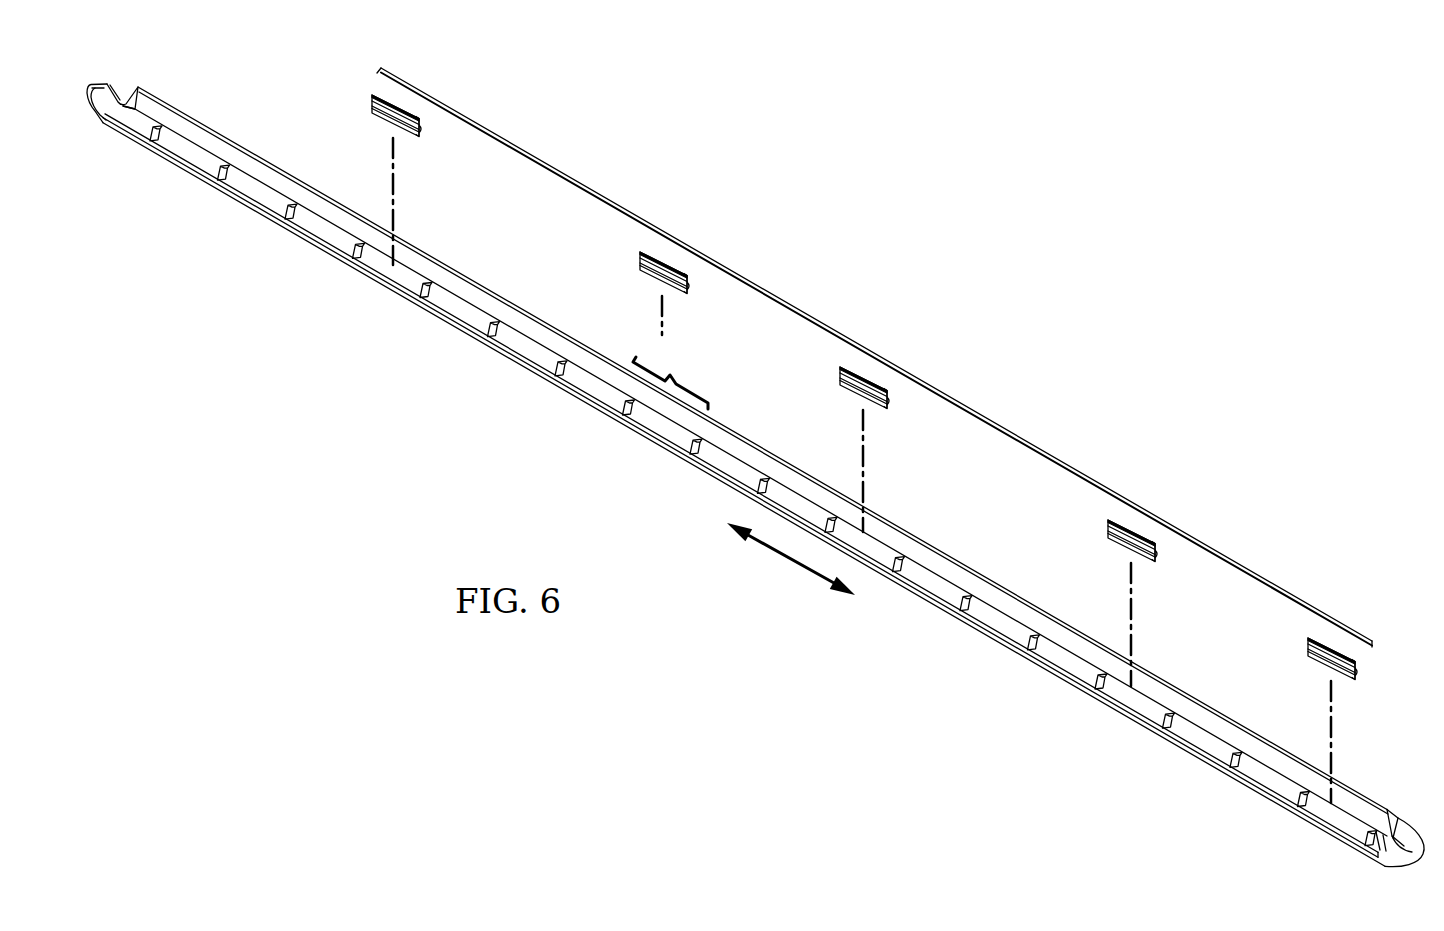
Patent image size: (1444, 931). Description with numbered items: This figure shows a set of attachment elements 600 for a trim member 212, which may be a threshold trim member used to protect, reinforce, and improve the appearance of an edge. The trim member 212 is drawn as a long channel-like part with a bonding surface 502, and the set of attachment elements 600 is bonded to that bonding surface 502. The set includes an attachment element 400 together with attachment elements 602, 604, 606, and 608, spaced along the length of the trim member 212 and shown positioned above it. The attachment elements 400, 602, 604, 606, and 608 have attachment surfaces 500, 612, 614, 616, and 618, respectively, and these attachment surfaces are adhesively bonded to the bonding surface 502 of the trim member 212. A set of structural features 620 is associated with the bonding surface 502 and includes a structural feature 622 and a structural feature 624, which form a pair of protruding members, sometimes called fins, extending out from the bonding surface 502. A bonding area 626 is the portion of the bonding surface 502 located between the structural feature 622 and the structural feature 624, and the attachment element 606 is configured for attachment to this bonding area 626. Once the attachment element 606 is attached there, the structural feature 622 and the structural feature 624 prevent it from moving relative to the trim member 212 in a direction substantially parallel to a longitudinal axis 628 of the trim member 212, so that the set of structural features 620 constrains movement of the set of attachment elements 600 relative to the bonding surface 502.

The trim member 212 is at (755, 469).
The attachment element 400 is at (1127, 594).
The attachment surface 500 is at (1158, 559).
The bonding surface 502 is at (216, 147).
The set of attachment elements 600 is at (877, 357).
The attachment element 602 is at (1331, 710).
The attachment element 604 is at (861, 439).
The attachment element 606 is at (661, 282).
The attachment element 608 is at (391, 170).
The attachment surface 612 is at (1358, 671).
The attachment surface 614 is at (890, 404).
The attachment surface 616 is at (688, 287).
The attachment surface 618 is at (420, 133).
The set of structural features 620 is at (755, 478).
The structural feature 622 is at (632, 427).
The structural feature 624 is at (699, 462).
The bonding area 626 is at (670, 375).
The longitudinal axis 628 is at (789, 558).